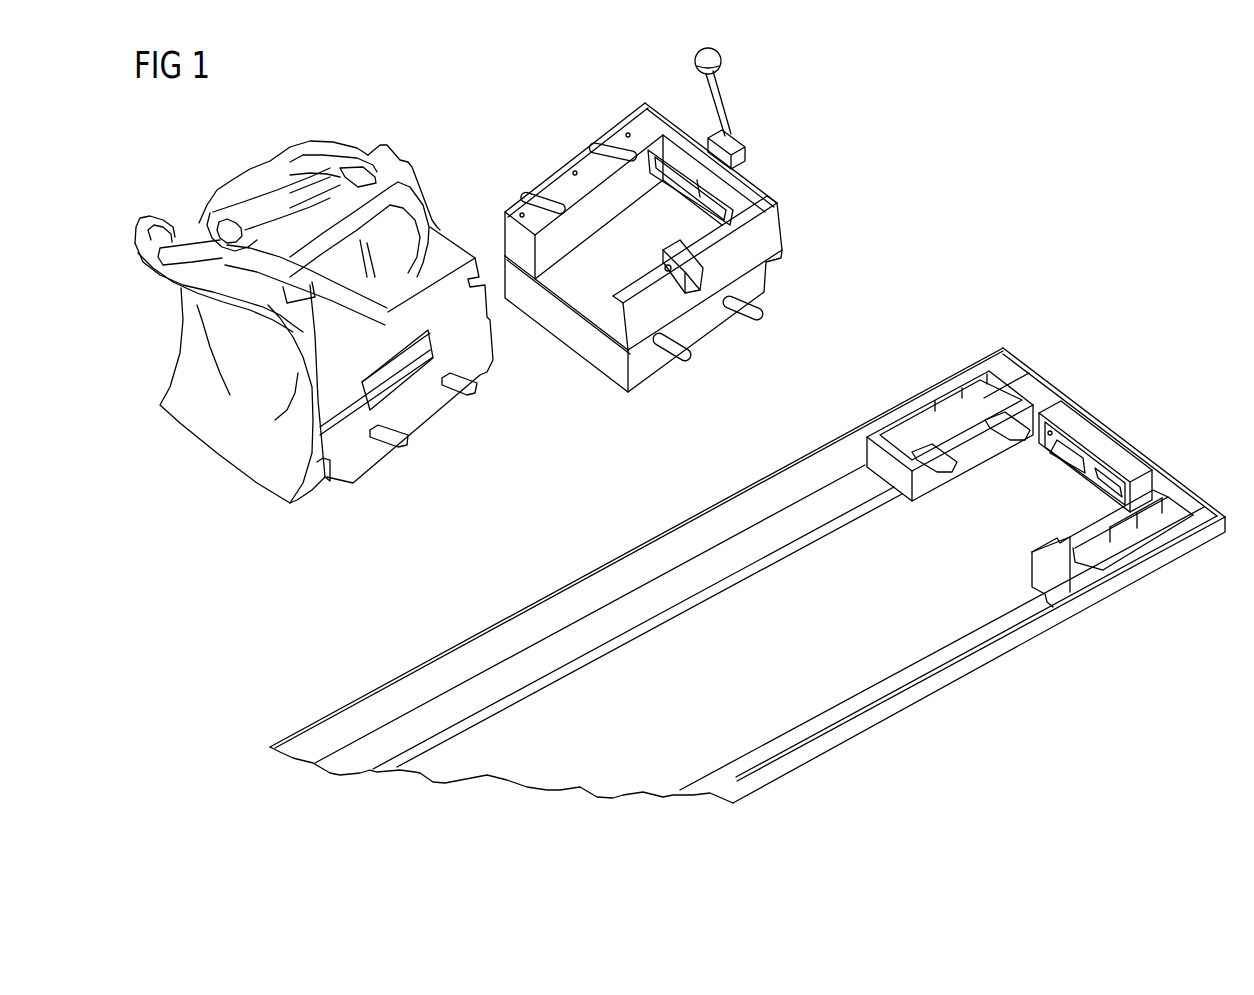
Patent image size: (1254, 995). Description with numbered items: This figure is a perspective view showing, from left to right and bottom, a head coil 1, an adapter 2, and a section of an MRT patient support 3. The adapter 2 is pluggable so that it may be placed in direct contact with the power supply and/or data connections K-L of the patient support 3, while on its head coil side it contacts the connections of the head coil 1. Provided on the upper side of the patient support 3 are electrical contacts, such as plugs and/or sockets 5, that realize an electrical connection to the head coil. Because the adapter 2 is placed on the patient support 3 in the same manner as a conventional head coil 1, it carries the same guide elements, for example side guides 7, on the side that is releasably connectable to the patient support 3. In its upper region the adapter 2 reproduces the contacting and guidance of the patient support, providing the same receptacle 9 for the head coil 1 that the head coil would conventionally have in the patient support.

The head coil 1 is at (304, 160).
The adapter 2 is at (774, 226).
The patient support 3 is at (695, 623).
The plugs and/or sockets 5 is at (675, 183).
The side guides 7 is at (690, 356).
The receptacle 9 is at (522, 195).
The power supply and/or data connections K-L is at (1100, 430).